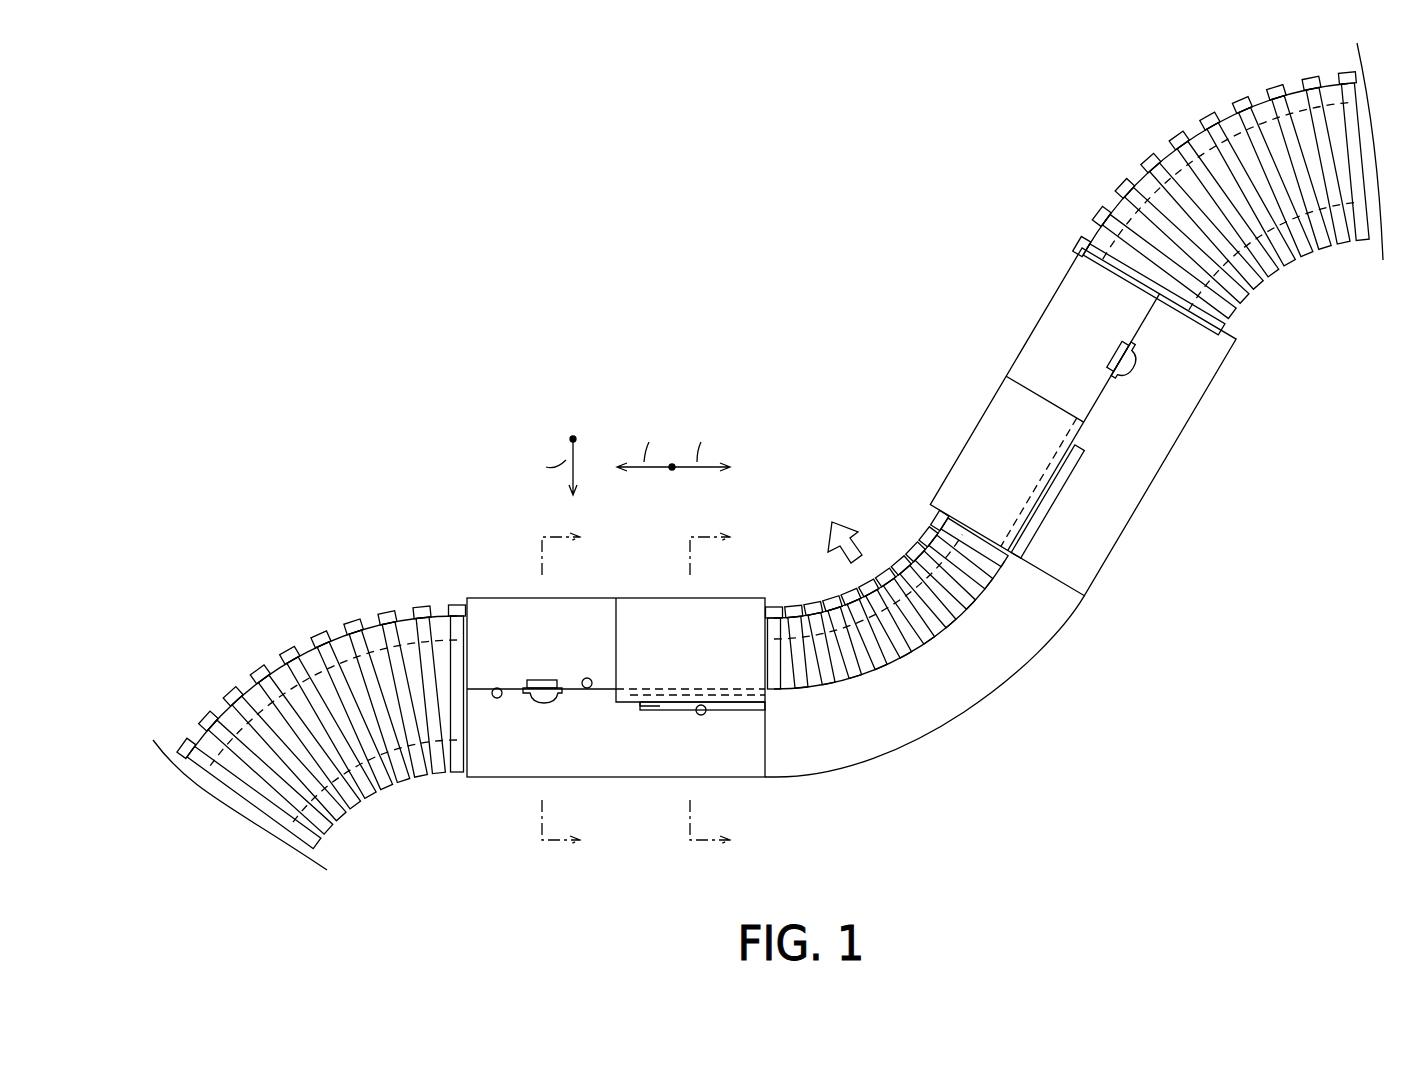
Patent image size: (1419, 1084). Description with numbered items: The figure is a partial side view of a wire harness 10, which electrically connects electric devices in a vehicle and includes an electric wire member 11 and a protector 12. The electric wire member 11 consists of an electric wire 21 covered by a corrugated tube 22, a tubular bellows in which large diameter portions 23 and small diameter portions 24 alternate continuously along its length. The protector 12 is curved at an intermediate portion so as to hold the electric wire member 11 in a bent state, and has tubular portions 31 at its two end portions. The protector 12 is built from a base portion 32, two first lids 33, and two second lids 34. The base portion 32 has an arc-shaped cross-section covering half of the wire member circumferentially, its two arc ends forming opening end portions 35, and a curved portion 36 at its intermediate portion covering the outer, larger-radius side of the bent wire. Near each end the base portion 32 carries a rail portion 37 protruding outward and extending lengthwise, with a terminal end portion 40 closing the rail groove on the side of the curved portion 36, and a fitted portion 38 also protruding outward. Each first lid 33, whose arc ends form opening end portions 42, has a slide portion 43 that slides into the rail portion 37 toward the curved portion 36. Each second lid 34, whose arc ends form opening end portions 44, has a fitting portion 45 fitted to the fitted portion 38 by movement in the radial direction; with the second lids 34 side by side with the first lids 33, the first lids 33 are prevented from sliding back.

The wire harness 10 is at (738, 400).
The electric wire member 11 is at (212, 583).
The protector 12 is at (1146, 514).
The electric wire 21 is at (249, 690).
The corrugated tube 22 is at (307, 645).
The large diameter portion 23 is at (389, 612).
The small diameter portion 24 is at (403, 612).
The tubular portion 31 is at (488, 592).
The base portion 32 is at (792, 778).
The first lid 33 is at (655, 598).
The second lid 34 is at (504, 598).
The opening end portion 35 is at (589, 690).
The curved portion 36 is at (970, 722).
The rail portion 37 is at (679, 712).
The fitted portion 38 is at (546, 680).
The terminal end portion 40 is at (735, 712).
The opening end portion 42 is at (707, 702).
The slide portion 43 is at (668, 688).
The opening end portion 44 is at (502, 687).
The fitting portion 45 is at (545, 703).